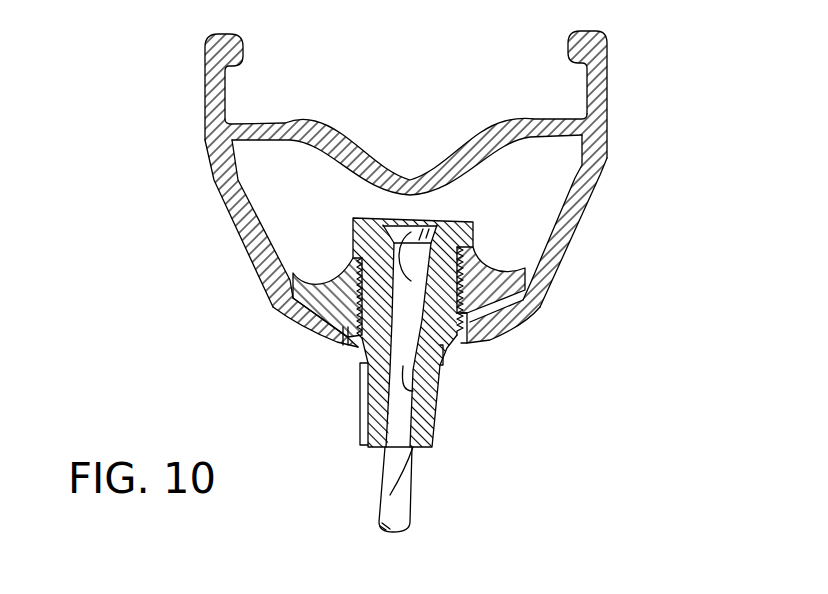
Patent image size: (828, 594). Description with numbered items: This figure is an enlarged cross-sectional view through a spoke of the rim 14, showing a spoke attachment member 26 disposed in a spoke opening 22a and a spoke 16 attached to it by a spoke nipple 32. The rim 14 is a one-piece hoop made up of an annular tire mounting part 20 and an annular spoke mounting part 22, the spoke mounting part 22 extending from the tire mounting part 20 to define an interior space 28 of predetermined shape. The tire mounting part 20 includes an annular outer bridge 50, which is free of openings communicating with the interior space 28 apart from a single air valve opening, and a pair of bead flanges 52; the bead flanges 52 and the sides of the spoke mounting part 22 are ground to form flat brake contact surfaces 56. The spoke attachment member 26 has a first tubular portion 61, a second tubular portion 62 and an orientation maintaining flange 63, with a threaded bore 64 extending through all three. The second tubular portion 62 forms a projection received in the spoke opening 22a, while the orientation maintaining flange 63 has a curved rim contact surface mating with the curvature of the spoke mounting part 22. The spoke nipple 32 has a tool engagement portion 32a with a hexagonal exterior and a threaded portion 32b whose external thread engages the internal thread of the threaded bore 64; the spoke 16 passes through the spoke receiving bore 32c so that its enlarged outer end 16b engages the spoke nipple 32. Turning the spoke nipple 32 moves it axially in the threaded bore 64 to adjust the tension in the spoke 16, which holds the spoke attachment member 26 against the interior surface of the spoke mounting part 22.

The rim 14 is at (388, 202).
The annular tire mounting part 20 is at (405, 202).
The annular spoke mounting part 22 is at (578, 248).
The spoke opening 22a is at (441, 344).
The spoke attachment member 26 is at (490, 248).
The interior space 28 is at (543, 188).
The annular outer bridge 50 is at (320, 120).
The bead flange 52 is at (243, 48).
The brake contact surface 56 is at (204, 108).
The first tubular portion 61 is at (352, 233).
The second tubular portion 62 is at (340, 343).
The orientation maintaining flange 63 is at (292, 285).
The threaded bore 64 is at (433, 224).
The spoke 16 is at (455, 382).
The outer end 16b is at (414, 389).
The spoke nipple 32 is at (429, 288).
The tool engagement portion 32a is at (361, 418).
The threaded portion 32b is at (478, 313).
The spoke receiving bore 32c is at (410, 222).